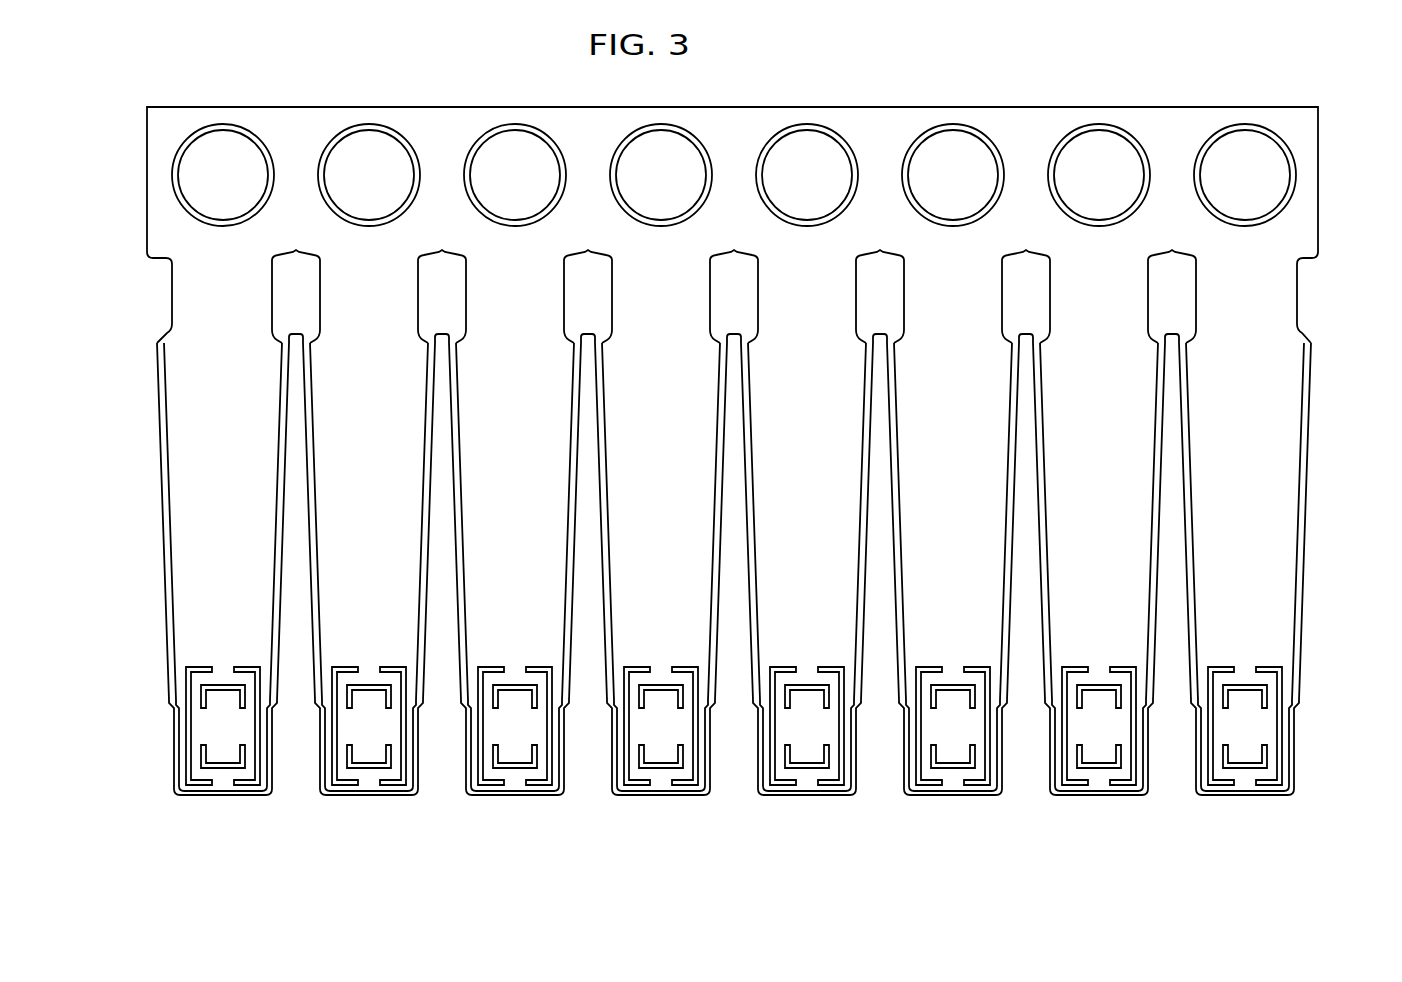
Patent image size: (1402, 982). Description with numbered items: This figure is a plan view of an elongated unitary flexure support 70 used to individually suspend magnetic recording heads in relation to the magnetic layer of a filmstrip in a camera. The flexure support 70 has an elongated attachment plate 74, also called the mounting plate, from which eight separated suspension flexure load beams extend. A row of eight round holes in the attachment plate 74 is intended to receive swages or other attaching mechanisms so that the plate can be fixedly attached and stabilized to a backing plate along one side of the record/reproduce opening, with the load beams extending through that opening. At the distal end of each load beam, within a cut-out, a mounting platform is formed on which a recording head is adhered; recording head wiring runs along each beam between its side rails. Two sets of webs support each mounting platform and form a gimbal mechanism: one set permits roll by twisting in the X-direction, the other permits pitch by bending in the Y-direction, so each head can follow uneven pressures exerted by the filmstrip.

The unitary flexure support 70 is at (150, 622).
The attachment plate 74 is at (1298, 190).